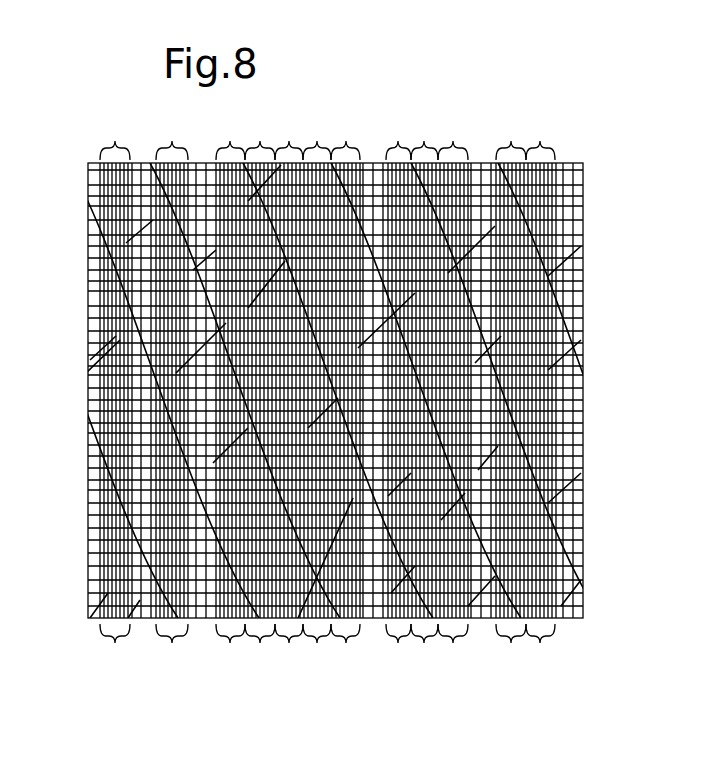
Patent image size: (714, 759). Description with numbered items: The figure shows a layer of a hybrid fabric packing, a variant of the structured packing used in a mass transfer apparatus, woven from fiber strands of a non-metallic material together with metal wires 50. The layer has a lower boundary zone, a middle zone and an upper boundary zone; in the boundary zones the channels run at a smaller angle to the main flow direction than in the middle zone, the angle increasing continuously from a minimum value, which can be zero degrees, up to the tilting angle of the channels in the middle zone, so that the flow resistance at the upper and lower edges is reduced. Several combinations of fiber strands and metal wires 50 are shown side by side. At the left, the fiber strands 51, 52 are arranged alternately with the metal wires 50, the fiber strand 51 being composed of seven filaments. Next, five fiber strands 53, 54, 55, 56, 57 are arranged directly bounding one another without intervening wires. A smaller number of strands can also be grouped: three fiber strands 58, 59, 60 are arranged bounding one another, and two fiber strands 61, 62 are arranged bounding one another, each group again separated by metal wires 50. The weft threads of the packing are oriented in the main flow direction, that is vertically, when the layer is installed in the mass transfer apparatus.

The metal wires 50 is at (80, 613).
The fiber strand 51 is at (108, 635).
The fiber strand 52 is at (165, 635).
The fiber strand 53 is at (222, 635).
The fiber strand 54 is at (253, 635).
The fiber strand 55 is at (283, 635).
The fiber strand 56 is at (310, 635).
The fiber strand 57 is at (338, 635).
The fiber strand 58 is at (392, 635).
The fiber strand 59 is at (418, 635).
The fiber strand 60 is at (447, 635).
The fiber strand 61 is at (504, 635).
The fiber strand 62 is at (532, 635).